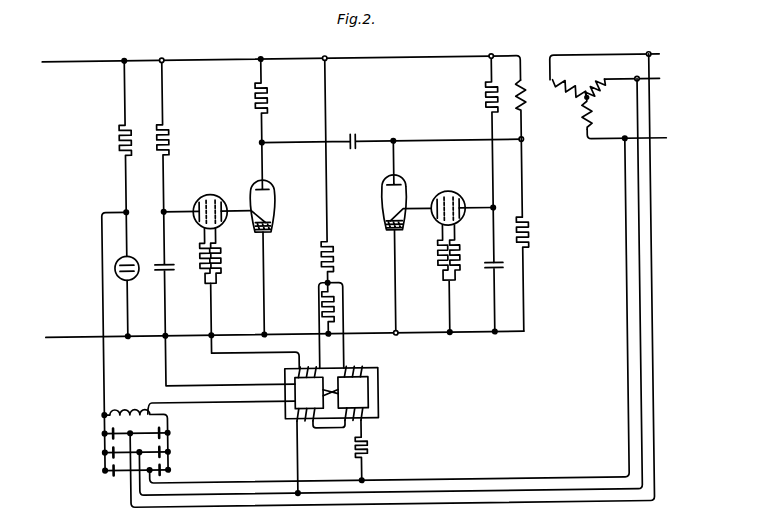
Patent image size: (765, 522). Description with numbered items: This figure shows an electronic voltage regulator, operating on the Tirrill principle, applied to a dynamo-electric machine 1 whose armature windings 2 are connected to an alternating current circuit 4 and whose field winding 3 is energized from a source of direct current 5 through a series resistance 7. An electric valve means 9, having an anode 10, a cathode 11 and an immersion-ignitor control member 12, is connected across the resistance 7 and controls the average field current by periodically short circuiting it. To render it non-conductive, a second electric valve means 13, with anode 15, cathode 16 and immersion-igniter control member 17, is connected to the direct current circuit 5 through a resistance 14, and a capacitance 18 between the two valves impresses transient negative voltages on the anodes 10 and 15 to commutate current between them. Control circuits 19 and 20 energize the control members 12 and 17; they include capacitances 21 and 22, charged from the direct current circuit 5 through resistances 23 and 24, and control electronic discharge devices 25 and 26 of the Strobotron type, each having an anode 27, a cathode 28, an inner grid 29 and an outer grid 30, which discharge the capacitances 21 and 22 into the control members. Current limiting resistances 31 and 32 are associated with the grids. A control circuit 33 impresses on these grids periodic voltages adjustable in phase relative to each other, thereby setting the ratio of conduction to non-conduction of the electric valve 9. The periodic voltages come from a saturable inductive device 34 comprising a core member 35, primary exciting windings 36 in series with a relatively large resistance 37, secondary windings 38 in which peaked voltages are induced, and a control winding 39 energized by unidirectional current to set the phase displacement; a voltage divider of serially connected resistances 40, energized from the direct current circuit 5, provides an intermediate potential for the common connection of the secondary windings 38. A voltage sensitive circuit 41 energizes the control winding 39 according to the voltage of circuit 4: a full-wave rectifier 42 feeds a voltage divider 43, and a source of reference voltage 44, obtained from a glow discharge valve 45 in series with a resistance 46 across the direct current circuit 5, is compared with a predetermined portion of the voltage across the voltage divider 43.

The dynamo-electric machine 1 is at (577, 93).
The armature windings 2 is at (546, 114).
The field winding 3 is at (524, 84).
The alternating current circuit 4 is at (662, 58).
The source of direct current 5 is at (80, 60).
The resistance 7 is at (530, 222).
The electric valve means 9 is at (395, 237).
The anode 10 is at (386, 186).
The cathode 11 is at (389, 229).
The control member 12 is at (388, 214).
The second electric valve means 13 is at (263, 239).
The resistance 14 is at (256, 99).
The anode 15 is at (257, 190).
The cathode 16 is at (271, 231).
The immersion-igniter control member 17 is at (268, 212).
The capacitance 18 is at (358, 133).
The control circuit 19 is at (427, 283).
The control circuit 20 is at (240, 293).
The capacitance 21 is at (503, 272).
The capacitance 22 is at (158, 275).
The resistance 23 is at (487, 96).
The resistance 24 is at (171, 131).
The control electronic discharge device 25 is at (452, 192).
The control electronic discharge device 26 is at (327, 208).
The anode 27 is at (198, 206).
The cathode 28 is at (223, 203).
The inner grid 29 is at (219, 223).
The outer grid 30 is at (204, 223).
The current limiting resistances 31 is at (438, 257).
The current limiting resistances 32 is at (201, 262).
The control circuit 33 is at (229, 447).
The saturable inductive device 34 is at (310, 415).
The core member 35 is at (377, 382).
The primary exciting windings 36 is at (303, 422).
The resistance 37 is at (366, 449).
The secondary windings 38 is at (305, 364).
The control winding 39 is at (353, 392).
The resistances 40 is at (336, 257).
The voltage sensitive circuit 41 is at (132, 375).
The rectifier 42 is at (192, 431).
The voltage divider 43 is at (140, 409).
The source of reference voltage 44 is at (107, 207).
The glow discharge valve 45 is at (136, 257).
The resistance 46 is at (121, 129).